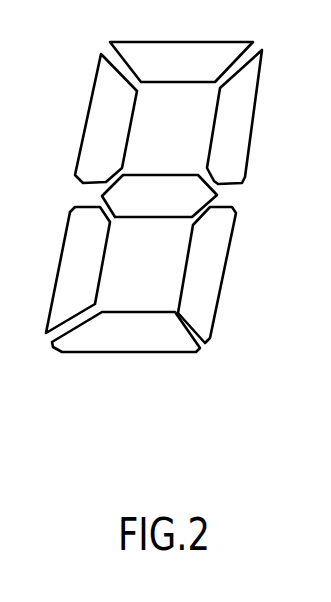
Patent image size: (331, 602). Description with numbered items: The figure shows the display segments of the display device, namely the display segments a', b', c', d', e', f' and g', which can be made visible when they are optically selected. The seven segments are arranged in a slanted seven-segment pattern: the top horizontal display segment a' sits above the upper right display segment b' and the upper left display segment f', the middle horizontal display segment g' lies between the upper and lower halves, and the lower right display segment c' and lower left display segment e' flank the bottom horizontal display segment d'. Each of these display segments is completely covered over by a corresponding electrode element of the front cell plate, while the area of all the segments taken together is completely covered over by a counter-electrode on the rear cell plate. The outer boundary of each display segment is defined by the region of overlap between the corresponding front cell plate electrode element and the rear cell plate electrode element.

The display segment a' is at (181, 62).
The display segment b' is at (234, 117).
The display segment c' is at (207, 275).
The display segment d' is at (126, 332).
The display segment e' is at (78, 270).
The display segment f' is at (106, 118).
The display segment g' is at (159, 196).